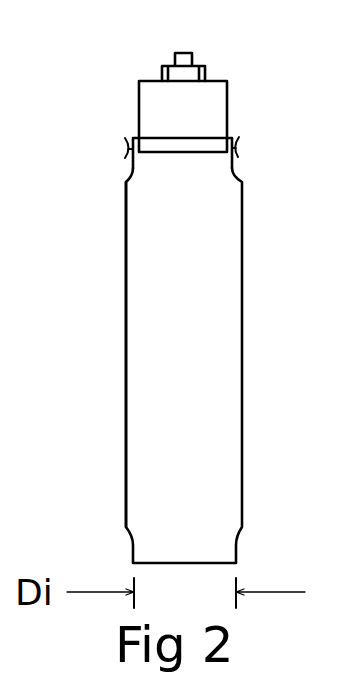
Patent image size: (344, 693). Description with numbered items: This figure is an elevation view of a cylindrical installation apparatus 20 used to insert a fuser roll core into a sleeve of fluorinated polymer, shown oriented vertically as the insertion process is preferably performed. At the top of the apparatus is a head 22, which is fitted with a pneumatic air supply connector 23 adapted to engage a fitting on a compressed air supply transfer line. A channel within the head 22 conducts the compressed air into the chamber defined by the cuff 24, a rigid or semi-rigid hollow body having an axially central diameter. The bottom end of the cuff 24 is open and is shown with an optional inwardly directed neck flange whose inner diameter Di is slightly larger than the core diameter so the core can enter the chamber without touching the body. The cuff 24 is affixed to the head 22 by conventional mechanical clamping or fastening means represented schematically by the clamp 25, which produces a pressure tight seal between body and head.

The installation apparatus 20 is at (102, 385).
The head 22 is at (139, 117).
The pneumatic air supply connector 23 is at (192, 55).
The cuff 24 is at (126, 222).
The clamp 25 is at (240, 154).